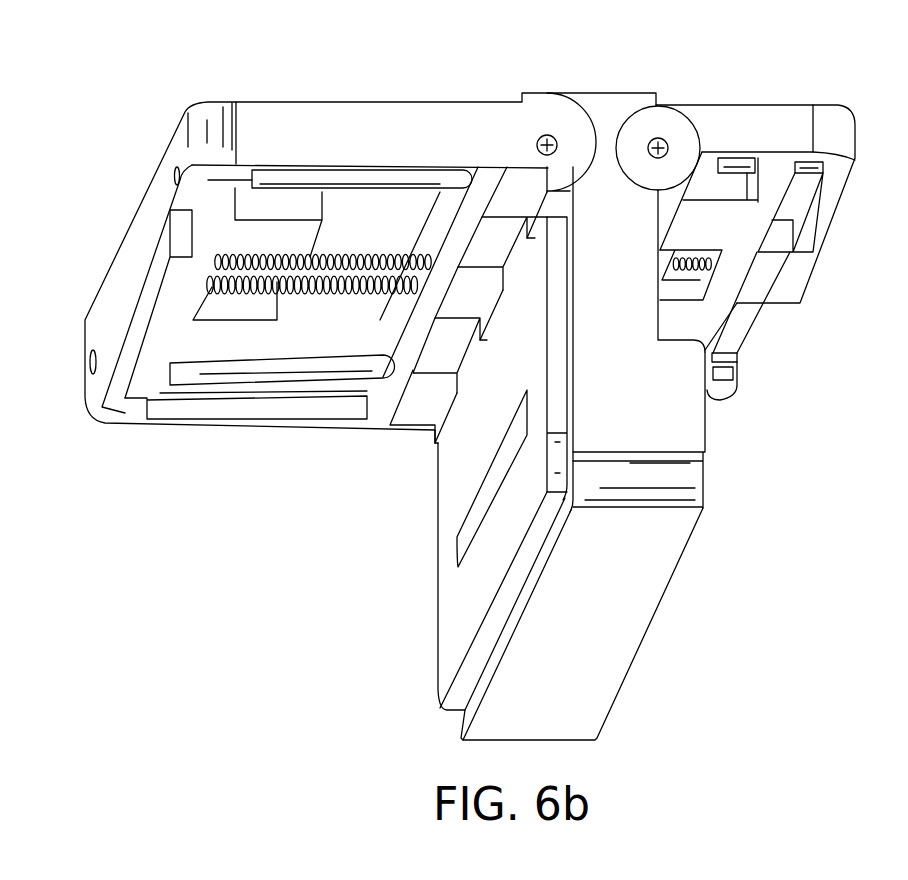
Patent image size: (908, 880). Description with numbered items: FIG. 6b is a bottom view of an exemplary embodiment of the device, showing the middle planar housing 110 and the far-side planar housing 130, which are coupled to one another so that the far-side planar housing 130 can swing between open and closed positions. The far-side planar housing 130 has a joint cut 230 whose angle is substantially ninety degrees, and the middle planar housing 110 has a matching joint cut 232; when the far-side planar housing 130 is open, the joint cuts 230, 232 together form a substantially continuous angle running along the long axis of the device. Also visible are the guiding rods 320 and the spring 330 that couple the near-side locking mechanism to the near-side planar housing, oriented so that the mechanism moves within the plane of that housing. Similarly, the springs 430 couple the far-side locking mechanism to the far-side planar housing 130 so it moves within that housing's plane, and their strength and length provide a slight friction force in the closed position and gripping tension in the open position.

The middle planar housing 110 is at (646, 422).
The far-side planar housing 130 is at (299, 118).
The joint cut 230 is at (435, 400).
The joint cut 232 is at (445, 342).
The guiding rods 320 is at (813, 176).
The spring 330 is at (694, 273).
The springs 430 is at (318, 262).